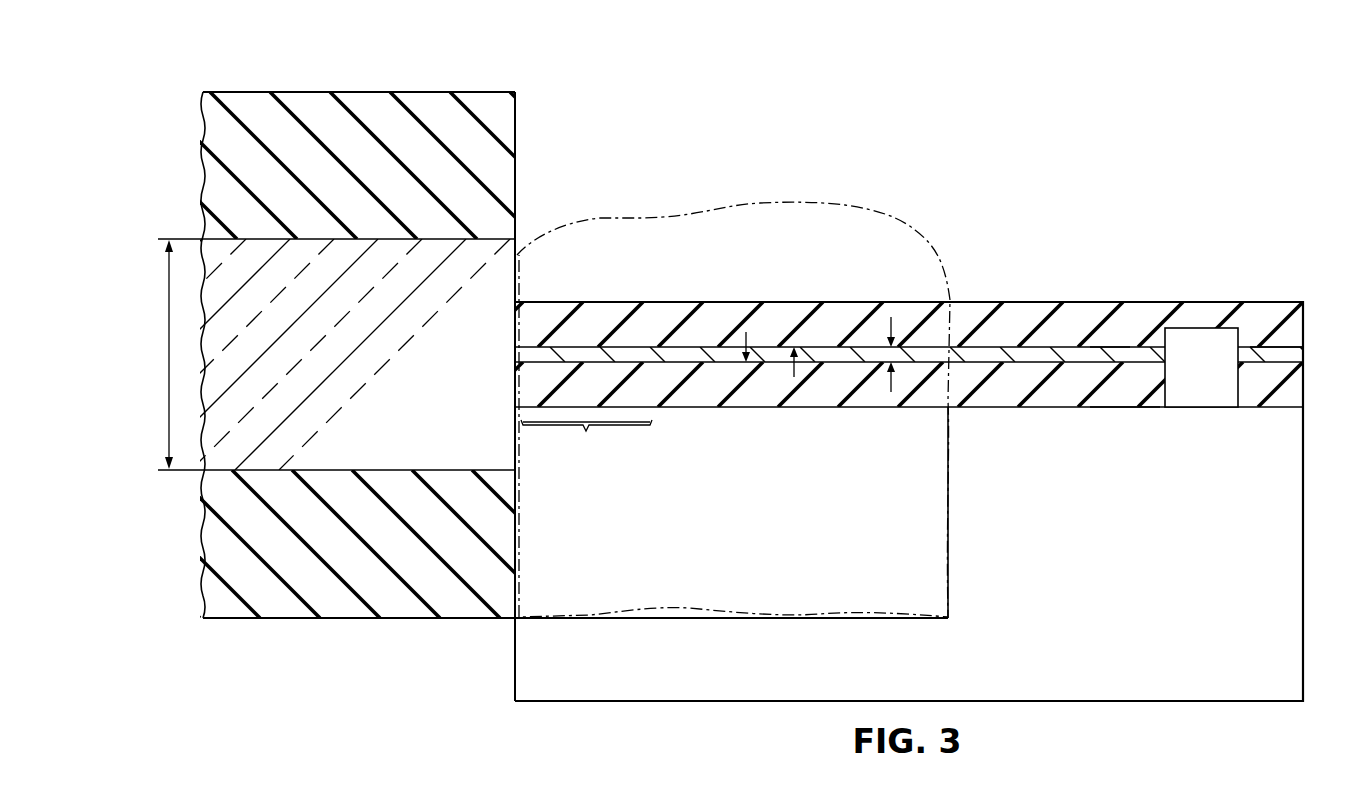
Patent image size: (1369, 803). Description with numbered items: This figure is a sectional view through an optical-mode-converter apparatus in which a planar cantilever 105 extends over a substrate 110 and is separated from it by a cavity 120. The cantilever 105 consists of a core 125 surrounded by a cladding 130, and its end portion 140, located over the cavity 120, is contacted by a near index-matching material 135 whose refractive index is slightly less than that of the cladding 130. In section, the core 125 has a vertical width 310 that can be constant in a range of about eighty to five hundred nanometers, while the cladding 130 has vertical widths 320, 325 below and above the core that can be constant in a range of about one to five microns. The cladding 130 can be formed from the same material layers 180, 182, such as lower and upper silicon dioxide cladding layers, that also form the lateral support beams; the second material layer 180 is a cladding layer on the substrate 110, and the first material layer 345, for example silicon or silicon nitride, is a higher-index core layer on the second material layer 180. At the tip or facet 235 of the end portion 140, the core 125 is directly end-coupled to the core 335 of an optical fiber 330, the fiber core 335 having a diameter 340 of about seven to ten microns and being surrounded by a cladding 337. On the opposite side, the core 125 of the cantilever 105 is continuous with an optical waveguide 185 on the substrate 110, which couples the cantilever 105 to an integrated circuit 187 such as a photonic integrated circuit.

The cantilever 105 is at (611, 292).
The substrate 110 is at (1303, 638).
The cavity 120 is at (712, 571).
The core 125 is at (849, 373).
The cladding 130 is at (672, 301).
The near index-matching material 135 is at (863, 207).
The end portion 140 is at (586, 439).
The second material layer 180 is at (1117, 400).
The material layer 182 is at (1027, 310).
The optical waveguide 185 is at (1112, 345).
The integrated circuit 187 is at (1197, 328).
The tip or facet 235 is at (499, 340).
The vertical width 310 is at (891, 317).
The vertical width 320 is at (746, 417).
The vertical width 325 is at (794, 293).
The optical fiber 330 is at (296, 83).
The core 335 is at (510, 452).
The cladding 337 is at (345, 620).
The diameter 340 is at (166, 352).
The first material layer 345 is at (1272, 355).